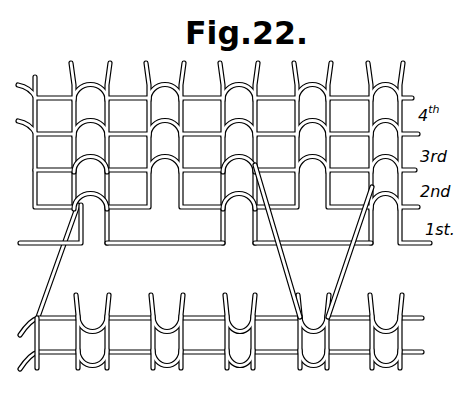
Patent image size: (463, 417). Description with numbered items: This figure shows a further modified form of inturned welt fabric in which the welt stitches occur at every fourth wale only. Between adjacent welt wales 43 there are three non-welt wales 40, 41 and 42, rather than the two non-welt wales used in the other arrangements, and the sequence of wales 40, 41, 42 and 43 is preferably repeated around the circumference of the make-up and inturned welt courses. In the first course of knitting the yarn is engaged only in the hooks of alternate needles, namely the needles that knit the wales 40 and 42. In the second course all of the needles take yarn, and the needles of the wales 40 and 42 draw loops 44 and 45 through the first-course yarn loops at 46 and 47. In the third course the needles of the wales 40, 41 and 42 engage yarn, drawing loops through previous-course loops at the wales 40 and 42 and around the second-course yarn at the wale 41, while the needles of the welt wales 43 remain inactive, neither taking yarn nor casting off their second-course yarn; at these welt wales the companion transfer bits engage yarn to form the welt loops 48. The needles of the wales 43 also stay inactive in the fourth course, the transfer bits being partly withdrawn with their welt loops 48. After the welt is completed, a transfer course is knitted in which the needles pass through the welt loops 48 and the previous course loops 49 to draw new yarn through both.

The wale 40 is at (240, 348).
The wale 41 is at (164, 348).
The wale 42 is at (238, 348).
The welt wale 43 is at (172, 348).
The loop 44 is at (242, 173).
The loop 45 is at (93, 177).
The first-course yarn loop 46 is at (238, 208).
The first-course yarn loop 47 is at (90, 213).
The welt loop 48 is at (345, 268).
The previous course loop 49 is at (323, 297).